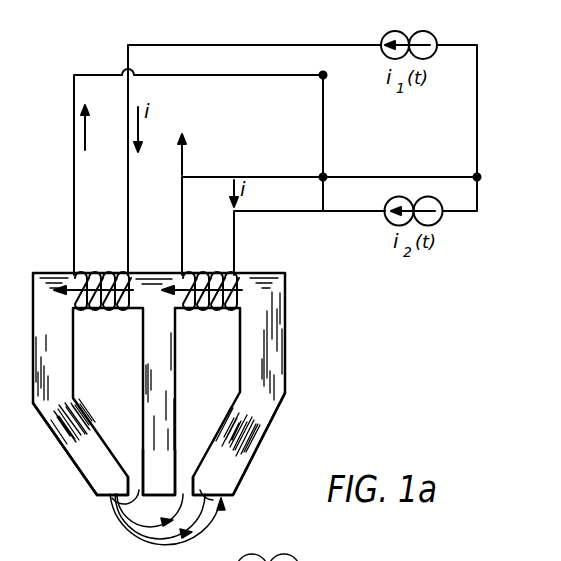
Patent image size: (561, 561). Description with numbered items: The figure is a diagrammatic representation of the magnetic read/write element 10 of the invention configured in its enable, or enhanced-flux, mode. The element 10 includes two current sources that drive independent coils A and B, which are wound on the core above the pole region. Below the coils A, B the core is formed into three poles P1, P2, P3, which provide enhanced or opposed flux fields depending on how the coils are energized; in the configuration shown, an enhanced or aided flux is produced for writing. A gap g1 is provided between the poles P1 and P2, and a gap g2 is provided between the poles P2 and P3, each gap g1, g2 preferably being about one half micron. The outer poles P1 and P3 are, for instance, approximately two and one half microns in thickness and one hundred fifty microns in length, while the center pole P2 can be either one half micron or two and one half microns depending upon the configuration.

The magnetic read/write element 10 is at (197, 408).
The coil A is at (93, 308).
The coil B is at (202, 308).
The pole P1 is at (80, 447).
The pole P2 is at (159, 472).
The pole P3 is at (239, 444).
The gap g1 is at (137, 504).
The gap g2 is at (204, 514).